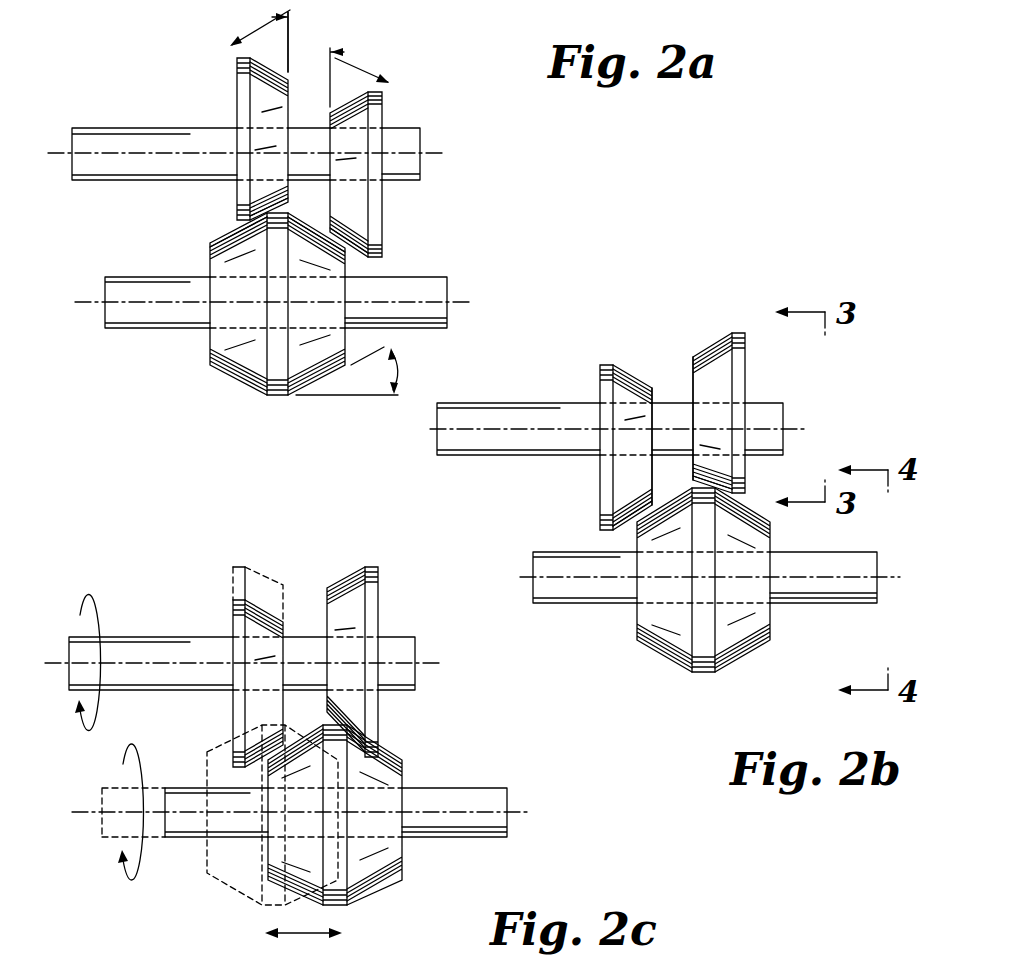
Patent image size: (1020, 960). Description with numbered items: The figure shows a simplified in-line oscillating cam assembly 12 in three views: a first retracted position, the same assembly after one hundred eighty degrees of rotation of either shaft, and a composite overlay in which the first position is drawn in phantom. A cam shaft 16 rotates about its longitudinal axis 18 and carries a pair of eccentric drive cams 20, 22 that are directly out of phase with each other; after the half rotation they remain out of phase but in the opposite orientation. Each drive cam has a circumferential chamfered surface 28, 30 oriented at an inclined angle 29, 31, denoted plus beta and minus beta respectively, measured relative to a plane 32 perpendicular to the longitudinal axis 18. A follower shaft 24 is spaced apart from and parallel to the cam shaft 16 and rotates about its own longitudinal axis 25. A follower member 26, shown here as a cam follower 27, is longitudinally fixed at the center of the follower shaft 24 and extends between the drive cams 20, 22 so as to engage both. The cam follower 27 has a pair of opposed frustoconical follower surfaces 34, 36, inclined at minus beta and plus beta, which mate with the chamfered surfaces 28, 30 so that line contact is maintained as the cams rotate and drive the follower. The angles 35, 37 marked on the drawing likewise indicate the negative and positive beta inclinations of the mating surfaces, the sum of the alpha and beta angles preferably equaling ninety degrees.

In FIG. 2A, the in-line oscillating cam assembly 12 is at (408, 50).
In FIG. 2A, the cam shaft 16 is at (70, 128).
In FIG. 2A, the longitudinal axis 18 is at (50, 170).
In FIG. 2A, the drive cam 20 is at (237, 90).
In FIG. 2B, the drive cam 20 is at (605, 365).
In FIG. 2C, the drive cam 20 is at (233, 607).
In FIG. 2A, the drive cam 22 is at (382, 115).
In FIG. 2B, the drive cam 22 is at (740, 333).
In FIG. 2C, the drive cam 22 is at (380, 620).
In FIG. 2A, the follower shaft 24 is at (462, 287).
In FIG. 2A, the longitudinal axis 25 is at (463, 305).
In FIG. 2A, the follower member 26 is at (238, 394).
In FIG. 2B, the follower member 26 is at (735, 660).
In FIG. 2C, the follower member 26 is at (372, 893).
In FIG. 2A, the cam follower 27 is at (308, 392).
In FIG. 2B, the chamfered surface 28 is at (658, 395).
In FIG. 2A, the inclined angle 29 is at (290, 196).
In FIG. 2B, the chamfered surface 30 is at (690, 377).
In FIG. 2A, the inclined angle 31 is at (346, 252).
In FIG. 2A, the plane 32 is at (288, 50).
In FIG. 2B, the follower surface 34 is at (645, 478).
In FIG. 2A, the negative offset tooth portion of output gear 35 is at (232, 236).
In FIG. 2B, the follower surface 36 is at (745, 500).
In FIG. 2A, the positive offset tooth portion of second pinion 37 is at (327, 232).